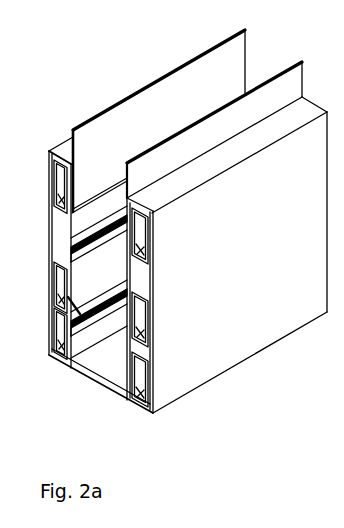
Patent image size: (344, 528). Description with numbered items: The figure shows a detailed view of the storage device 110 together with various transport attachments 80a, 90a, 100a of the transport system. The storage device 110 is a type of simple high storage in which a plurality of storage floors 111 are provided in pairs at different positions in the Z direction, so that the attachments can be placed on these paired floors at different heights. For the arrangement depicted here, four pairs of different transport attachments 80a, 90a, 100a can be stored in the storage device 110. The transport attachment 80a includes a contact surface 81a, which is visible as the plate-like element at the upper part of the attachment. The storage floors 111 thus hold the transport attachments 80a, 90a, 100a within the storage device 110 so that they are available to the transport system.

The contact surface 81a is at (109, 137).
The storage device 110 is at (245, 255).
The storage floors 111 is at (66, 251).
The transport attachment 100a is at (64, 350).
The transport attachment 90a is at (80, 314).
The transport attachment 80a is at (72, 213).